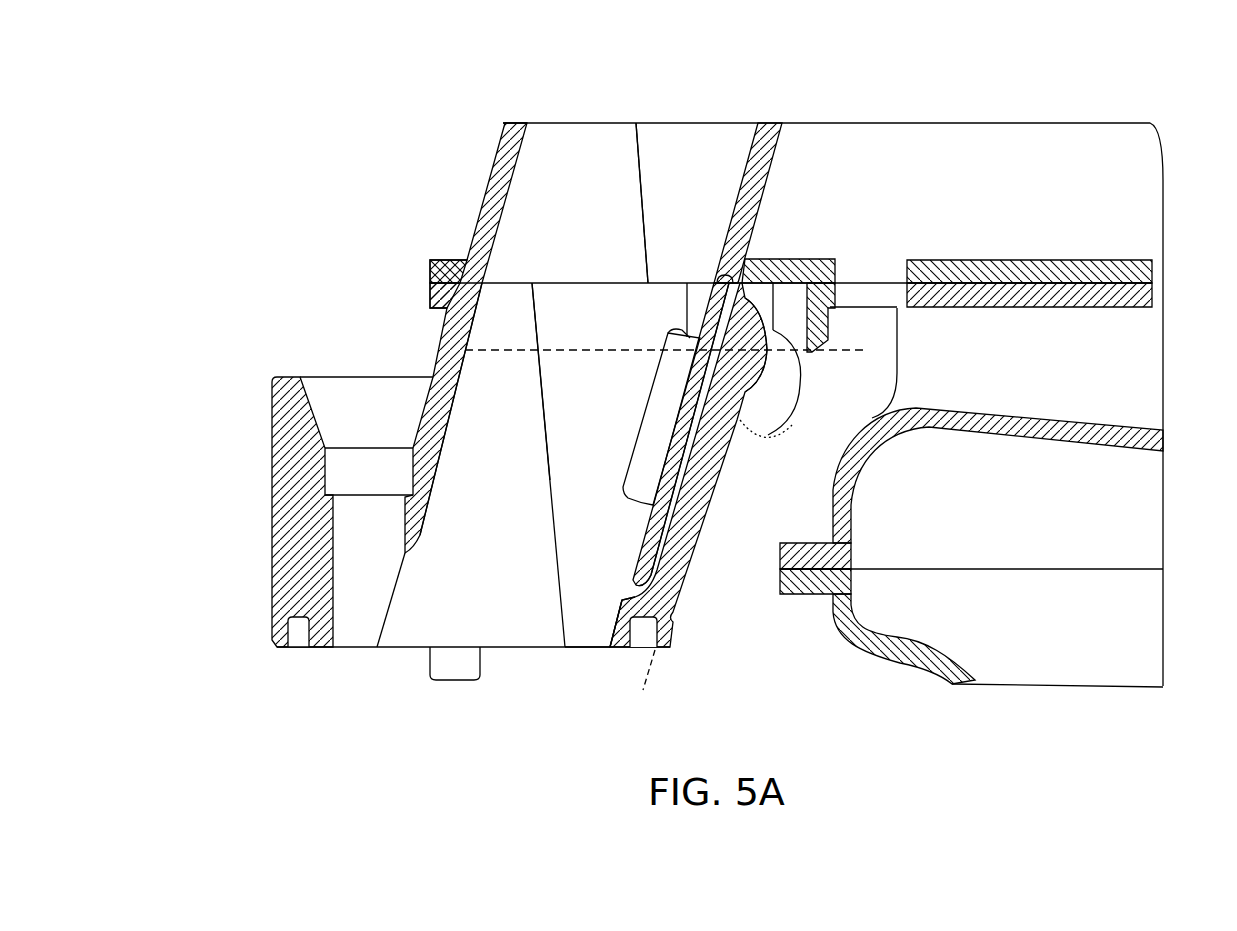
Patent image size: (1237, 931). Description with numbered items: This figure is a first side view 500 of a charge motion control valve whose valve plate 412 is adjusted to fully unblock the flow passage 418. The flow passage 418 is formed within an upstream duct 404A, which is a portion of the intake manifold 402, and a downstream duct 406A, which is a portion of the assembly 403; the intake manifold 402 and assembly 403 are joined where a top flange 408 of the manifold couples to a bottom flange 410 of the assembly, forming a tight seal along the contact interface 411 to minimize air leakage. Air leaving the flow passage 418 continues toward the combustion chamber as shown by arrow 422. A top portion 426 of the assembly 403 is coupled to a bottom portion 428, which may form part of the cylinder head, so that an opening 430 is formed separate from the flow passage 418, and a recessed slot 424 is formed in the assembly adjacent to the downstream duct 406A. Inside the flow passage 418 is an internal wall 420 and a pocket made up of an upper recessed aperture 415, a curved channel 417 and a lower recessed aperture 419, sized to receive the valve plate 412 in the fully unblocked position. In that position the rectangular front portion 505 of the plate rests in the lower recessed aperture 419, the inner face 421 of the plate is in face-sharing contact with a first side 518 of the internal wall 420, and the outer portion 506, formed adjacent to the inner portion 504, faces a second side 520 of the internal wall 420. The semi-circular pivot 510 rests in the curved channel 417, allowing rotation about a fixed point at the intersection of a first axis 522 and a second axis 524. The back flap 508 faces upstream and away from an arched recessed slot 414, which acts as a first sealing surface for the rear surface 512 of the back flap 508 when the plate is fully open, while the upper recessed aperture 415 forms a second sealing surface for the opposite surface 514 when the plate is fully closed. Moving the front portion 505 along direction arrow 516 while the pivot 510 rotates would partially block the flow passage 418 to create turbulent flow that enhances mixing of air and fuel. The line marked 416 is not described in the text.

The intake manifold 402 is at (947, 147).
The assembly 403 is at (280, 520).
The upstream duct 404A is at (502, 130).
The downstream duct 406A is at (687, 607).
The top flange 408 is at (430, 263).
The bottom flange 410 is at (430, 293).
The contact interface 411 is at (1120, 283).
The valve plate 412 is at (683, 520).
The recessed slot 414 is at (750, 275).
The upper recessed aperture 415 is at (790, 310).
The inlet flow 416 is at (635, 102).
The curved channel 417 is at (792, 410).
The flow passage 418 is at (560, 332).
The lower recessed aperture 419 is at (625, 600).
The internal wall 420 is at (510, 564).
The inner face 421 is at (692, 477).
The arrow 422 is at (410, 672).
The recessed slot 424 is at (360, 403).
The top portion 426 is at (1082, 423).
The bottom portion 428 is at (899, 655).
The opening 430 is at (1082, 668).
The first side view 500 is at (305, 117).
The inner portion 504 is at (672, 463).
The front portion 505 is at (645, 585).
The outer portion 506 is at (668, 402).
The back flap 508 is at (720, 293).
The pivot 510 is at (700, 330).
The rear surface 512 is at (720, 277).
The opposite surface 514 is at (810, 330).
The direction arrow 516 is at (570, 518).
The first side 518 is at (638, 647).
The second side 520 is at (442, 463).
The first axis 522 is at (838, 352).
The second axis 524 is at (645, 680).